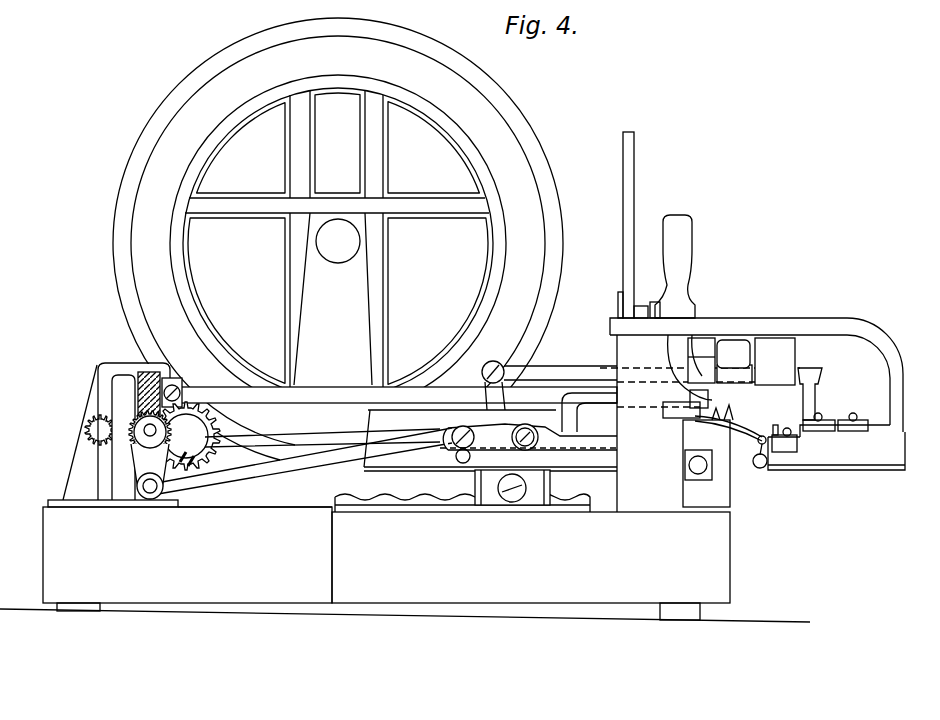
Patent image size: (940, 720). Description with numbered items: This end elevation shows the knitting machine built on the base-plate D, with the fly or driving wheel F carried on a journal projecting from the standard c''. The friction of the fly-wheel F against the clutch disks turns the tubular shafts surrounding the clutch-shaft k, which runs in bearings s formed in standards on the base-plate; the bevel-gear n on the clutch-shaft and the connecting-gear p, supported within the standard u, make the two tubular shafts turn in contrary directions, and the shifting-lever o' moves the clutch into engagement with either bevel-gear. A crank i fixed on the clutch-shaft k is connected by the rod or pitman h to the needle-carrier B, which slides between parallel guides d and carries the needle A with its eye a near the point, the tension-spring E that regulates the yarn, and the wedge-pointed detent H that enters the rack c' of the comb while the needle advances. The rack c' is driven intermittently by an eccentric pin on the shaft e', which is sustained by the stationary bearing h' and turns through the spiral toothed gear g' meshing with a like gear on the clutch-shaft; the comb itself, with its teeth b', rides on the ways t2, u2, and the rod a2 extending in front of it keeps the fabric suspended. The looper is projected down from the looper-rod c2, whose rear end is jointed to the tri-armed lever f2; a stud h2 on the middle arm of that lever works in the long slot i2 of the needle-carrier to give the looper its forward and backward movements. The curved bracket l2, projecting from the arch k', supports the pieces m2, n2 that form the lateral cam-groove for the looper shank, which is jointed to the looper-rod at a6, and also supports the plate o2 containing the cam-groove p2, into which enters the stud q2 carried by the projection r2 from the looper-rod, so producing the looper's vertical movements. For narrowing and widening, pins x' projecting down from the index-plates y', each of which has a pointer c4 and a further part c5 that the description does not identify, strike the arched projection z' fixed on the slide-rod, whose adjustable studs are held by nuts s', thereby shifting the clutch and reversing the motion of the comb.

The fly or driving wheel F is at (338, 243).
The standard c'' is at (333, 299).
The standard u is at (89, 432).
The stationary bearing h' is at (123, 437).
The bearing s is at (124, 385).
The spiral toothed gear g' is at (186, 436).
The bevel-gear n is at (179, 442).
The connecting-gear p is at (190, 461).
The shifting-lever o' is at (322, 438).
The rod or pitman h is at (305, 461).
The crank i is at (371, 400).
The clutch-shaft k is at (483, 402).
The base-plate D is at (405, 561).
The tri-armed lever f2 is at (493, 385).
The looper-rod c2 is at (628, 374).
The shaft e' is at (461, 397).
The guide d is at (490, 440).
The detent H is at (639, 411).
The needle-carrier B is at (598, 430).
The tension-spring E is at (530, 437).
The slot i2 is at (528, 456).
The stud h2 is at (470, 456).
The eye a is at (462, 490).
The arch k' is at (756, 375).
The guide or way t2 is at (712, 463).
The curved bracket l2 is at (836, 447).
The cam-groove piece n2 is at (819, 422).
The cam-groove piece m2 is at (853, 422).
The joint a6 is at (809, 380).
The projection r2 is at (701, 360).
The stud q2 is at (705, 345).
The plate o2 is at (733, 354).
The cam-groove p2 is at (702, 367).
The rack c' is at (681, 410).
The guide or way u2 is at (671, 424).
The arched projection z' is at (717, 421).
The pin x' is at (739, 410).
The index-plate y' is at (747, 425).
The needle A is at (730, 436).
The rod a2 is at (760, 466).
The nut s' is at (784, 440).
The comb tooth b' is at (776, 425).
The pointer c4 is at (760, 428).
The pin c5 is at (766, 438).